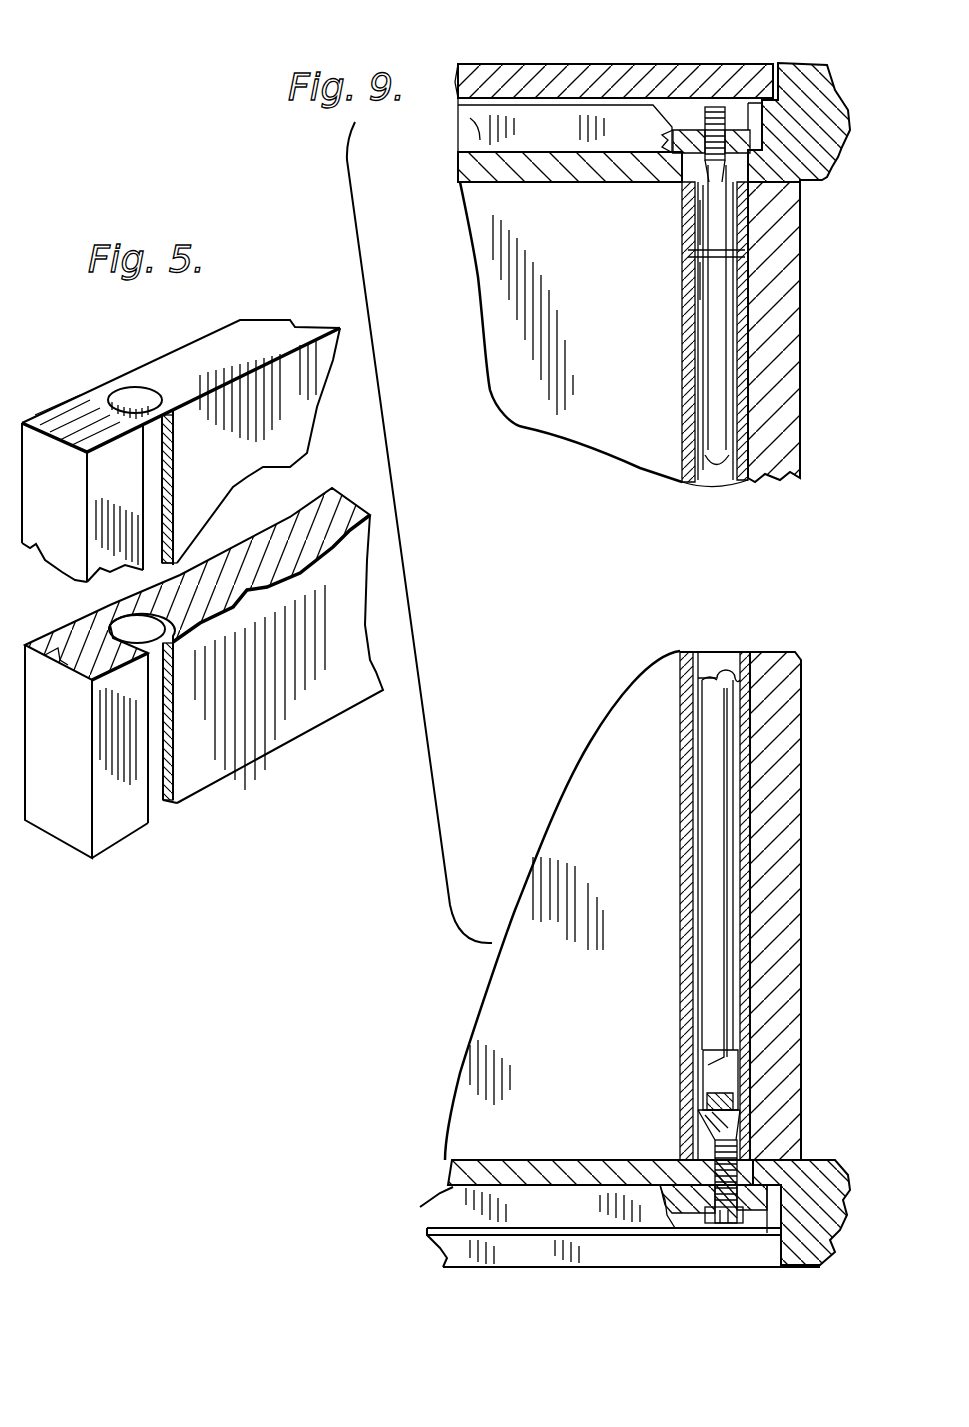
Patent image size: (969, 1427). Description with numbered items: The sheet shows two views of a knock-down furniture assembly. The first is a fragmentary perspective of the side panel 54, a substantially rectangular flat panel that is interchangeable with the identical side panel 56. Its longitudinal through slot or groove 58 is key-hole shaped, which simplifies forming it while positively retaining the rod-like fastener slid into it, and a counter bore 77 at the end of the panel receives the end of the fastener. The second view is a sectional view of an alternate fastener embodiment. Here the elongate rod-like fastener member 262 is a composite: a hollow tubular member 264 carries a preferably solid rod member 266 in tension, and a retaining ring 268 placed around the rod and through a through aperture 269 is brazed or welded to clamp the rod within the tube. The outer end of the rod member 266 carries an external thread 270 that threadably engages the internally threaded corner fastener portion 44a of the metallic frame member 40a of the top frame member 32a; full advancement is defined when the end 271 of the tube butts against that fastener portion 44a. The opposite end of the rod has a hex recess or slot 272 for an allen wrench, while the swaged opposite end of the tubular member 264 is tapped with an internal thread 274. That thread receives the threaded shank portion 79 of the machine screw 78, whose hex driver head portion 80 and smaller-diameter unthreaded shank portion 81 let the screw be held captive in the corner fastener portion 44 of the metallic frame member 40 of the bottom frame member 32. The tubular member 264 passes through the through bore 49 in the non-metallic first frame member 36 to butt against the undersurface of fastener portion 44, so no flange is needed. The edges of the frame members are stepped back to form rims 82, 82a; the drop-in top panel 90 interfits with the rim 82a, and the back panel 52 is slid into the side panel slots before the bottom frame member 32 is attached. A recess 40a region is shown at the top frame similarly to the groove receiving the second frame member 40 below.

In FIG. 9, the bottom frame member 32 is at (858, 1200).
In FIG. 9, the top frame member 32a is at (839, 100).
In FIG. 9, the first frame member 36 is at (533, 1118).
In FIG. 9, the second frame member 40 is at (457, 1205).
In FIG. 9, the metallic frame member of top frame assembly 40a is at (457, 133).
In FIG. 9, the corner fastener portion 44 is at (765, 1215).
In FIG. 9, the corner fastener portion of top frame member 44a is at (742, 147).
In FIG. 9, the through bore 49 is at (748, 1148).
In FIG. 9, the back panel 52 is at (632, 266).
In FIG. 5, the side panel 54 is at (247, 733).
In FIG. 9, the side panel 56 is at (783, 361).
In FIG. 5, the slot or groove 58 is at (117, 393).
In FIG. 9, the slot or groove 58 is at (725, 660).
In FIG. 5, the counter bore 77 is at (175, 805).
In FIG. 9, the machine screw 78 is at (735, 1237).
In FIG. 9, the threaded shank portion 79 is at (730, 1137).
In FIG. 9, the driver head portion 80 is at (710, 1225).
In FIG. 9, the unthreaded shank portion 81 is at (693, 1220).
In FIG. 9, the rim 82 is at (775, 1248).
In FIG. 9, the rim of top frame member 82a is at (776, 64).
In FIG. 9, the top panel 90 is at (537, 63).
In FIG. 9, the elongate rod-like fastener member 262 is at (685, 1015).
In FIG. 9, the tubular member 264 is at (698, 330).
In FIG. 9, the rod member 266 is at (715, 360).
In FIG. 9, the retaining ring 268 is at (686, 253).
In FIG. 9, the through aperture 269 is at (752, 254).
In FIG. 9, the external thread 270 is at (692, 150).
In FIG. 9, the end of tubular member 271 is at (684, 147).
In FIG. 9, the hex recess or slot 272 is at (702, 1130).
In FIG. 9, the internal thread 274 is at (712, 1146).